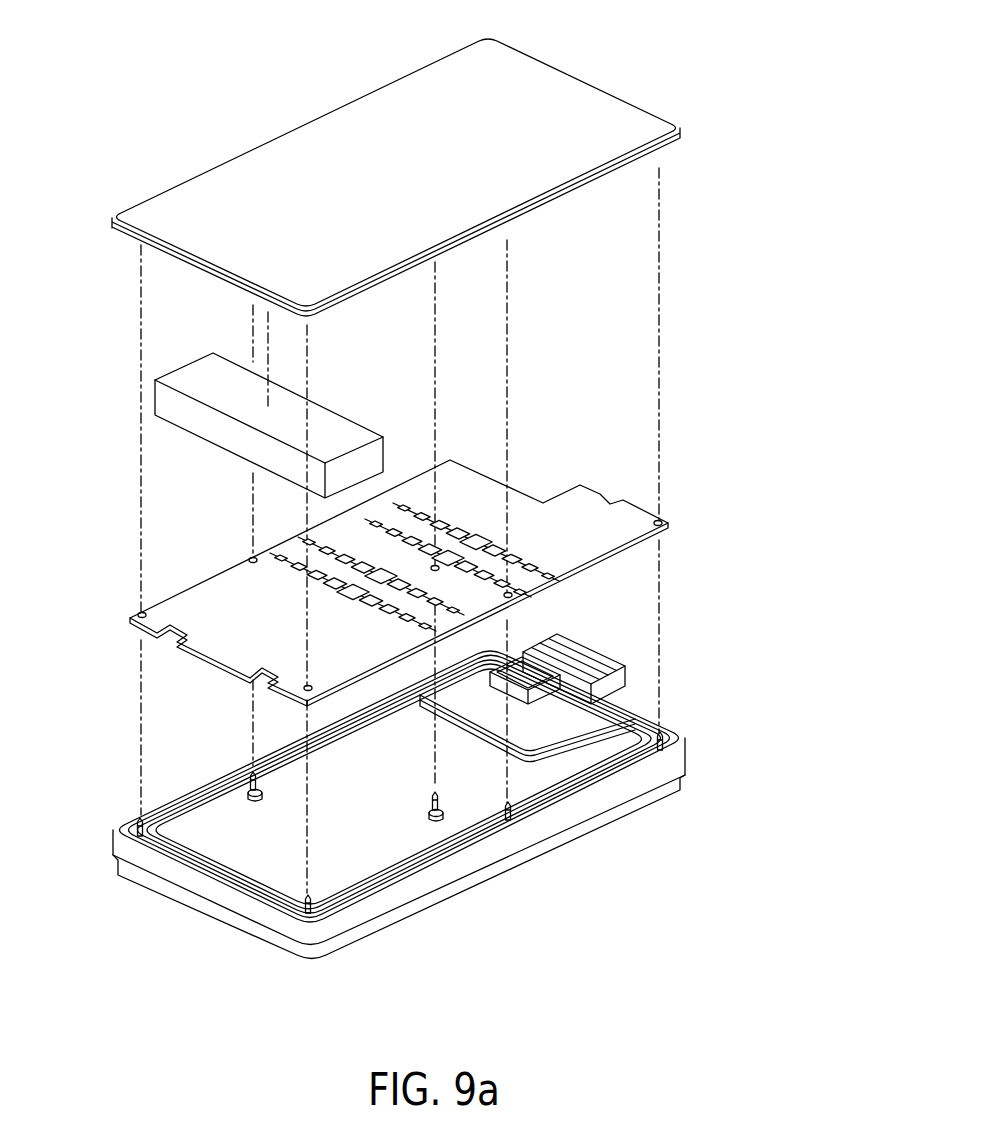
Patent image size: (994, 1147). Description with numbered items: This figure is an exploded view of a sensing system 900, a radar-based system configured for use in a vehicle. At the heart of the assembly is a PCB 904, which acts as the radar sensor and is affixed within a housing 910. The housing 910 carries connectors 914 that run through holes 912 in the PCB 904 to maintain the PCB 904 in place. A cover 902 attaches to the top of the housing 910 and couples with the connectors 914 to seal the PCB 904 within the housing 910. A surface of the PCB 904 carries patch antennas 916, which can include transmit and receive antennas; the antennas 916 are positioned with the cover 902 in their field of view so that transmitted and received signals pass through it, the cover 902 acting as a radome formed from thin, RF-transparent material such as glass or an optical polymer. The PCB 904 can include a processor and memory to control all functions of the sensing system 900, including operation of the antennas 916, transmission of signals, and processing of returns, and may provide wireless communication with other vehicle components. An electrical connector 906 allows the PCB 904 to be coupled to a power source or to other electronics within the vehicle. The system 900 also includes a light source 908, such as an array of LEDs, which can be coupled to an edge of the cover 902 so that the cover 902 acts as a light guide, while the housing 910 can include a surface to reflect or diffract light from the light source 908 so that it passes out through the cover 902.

The sensing system 900 is at (758, 70).
The cover 902 is at (243, 177).
The PCB 904 is at (568, 505).
The electrical connector 906 is at (575, 648).
The light source 908 is at (170, 395).
The housing 910 is at (232, 902).
The holes 912 is at (252, 558).
The connectors 914 is at (664, 736).
The patch antennas 916 is at (335, 598).